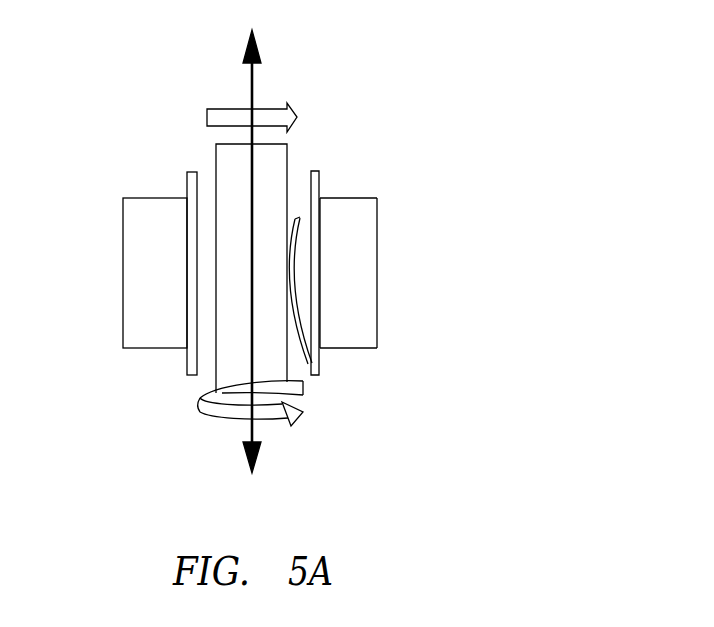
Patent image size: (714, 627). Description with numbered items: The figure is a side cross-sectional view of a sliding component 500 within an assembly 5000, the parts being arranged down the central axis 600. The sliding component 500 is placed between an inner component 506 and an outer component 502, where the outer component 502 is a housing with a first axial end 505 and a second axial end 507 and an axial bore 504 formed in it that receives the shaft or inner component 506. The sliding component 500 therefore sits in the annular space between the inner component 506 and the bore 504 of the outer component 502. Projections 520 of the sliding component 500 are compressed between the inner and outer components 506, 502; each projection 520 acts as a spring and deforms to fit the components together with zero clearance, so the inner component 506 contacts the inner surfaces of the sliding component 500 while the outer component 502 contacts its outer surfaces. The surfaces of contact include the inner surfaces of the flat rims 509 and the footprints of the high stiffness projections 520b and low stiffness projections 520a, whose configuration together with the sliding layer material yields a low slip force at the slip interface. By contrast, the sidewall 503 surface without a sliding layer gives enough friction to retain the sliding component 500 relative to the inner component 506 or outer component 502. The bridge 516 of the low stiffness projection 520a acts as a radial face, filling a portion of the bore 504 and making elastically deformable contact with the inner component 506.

The assembly 5000 is at (397, 55).
The sliding component 500 is at (187, 257).
The outer component 502 is at (377, 308).
The sidewall 503 is at (319, 180).
The axial bore 504 is at (298, 345).
The first axial end 505 is at (347, 198).
The inner component 506 is at (288, 425).
The second axial end 507 is at (358, 348).
The flat rim 509 is at (319, 365).
The bridge 516 is at (290, 277).
The projection 520 is at (215, 352).
The low stiffness projection 520a is at (296, 215).
The high stiffness projection 520b is at (216, 203).
The central axis 600 is at (244, 434).